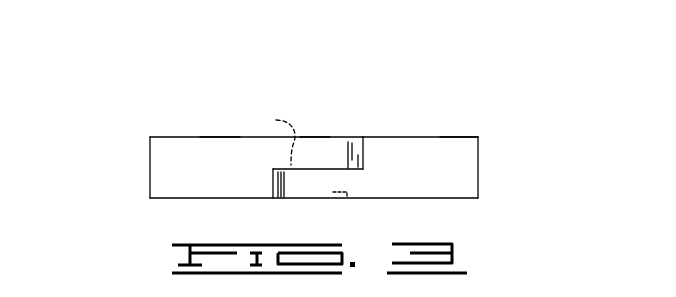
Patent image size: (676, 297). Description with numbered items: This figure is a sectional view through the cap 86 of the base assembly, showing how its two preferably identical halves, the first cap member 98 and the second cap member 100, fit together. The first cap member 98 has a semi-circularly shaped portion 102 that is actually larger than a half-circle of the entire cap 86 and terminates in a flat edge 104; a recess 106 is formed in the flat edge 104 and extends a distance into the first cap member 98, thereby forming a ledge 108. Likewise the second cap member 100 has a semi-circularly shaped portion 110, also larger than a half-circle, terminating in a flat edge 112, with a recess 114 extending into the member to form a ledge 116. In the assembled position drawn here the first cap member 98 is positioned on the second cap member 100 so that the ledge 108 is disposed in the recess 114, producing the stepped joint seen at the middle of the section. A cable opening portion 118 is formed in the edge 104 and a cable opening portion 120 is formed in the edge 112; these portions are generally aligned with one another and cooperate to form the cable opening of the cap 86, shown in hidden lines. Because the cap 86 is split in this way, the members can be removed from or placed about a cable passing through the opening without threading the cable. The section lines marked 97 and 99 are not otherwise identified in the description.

The cap 86 is at (462, 145).
The first end portion 97 is at (180, 137).
The first cap member 98 is at (198, 148).
The bottom surface 99 is at (385, 199).
The second cap member 100 is at (407, 147).
The semi-circularly shaped portion 102 is at (150, 153).
The flat edge 104 is at (375, 147).
The recess 106 is at (330, 169).
The ledge 108 is at (320, 153).
The semi-circularly shaped portion 110 is at (472, 158).
The flat edge 112 is at (273, 186).
The recess 114 is at (301, 167).
The ledge 116 is at (302, 188).
The cable opening portion 118 is at (272, 138).
The cable opening portion 120 is at (327, 199).